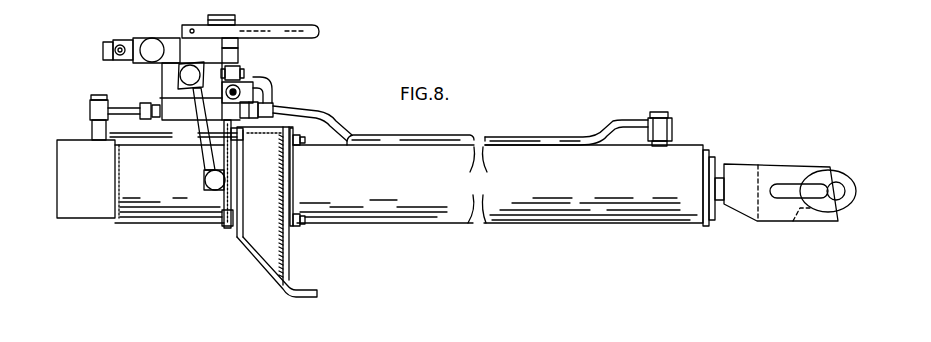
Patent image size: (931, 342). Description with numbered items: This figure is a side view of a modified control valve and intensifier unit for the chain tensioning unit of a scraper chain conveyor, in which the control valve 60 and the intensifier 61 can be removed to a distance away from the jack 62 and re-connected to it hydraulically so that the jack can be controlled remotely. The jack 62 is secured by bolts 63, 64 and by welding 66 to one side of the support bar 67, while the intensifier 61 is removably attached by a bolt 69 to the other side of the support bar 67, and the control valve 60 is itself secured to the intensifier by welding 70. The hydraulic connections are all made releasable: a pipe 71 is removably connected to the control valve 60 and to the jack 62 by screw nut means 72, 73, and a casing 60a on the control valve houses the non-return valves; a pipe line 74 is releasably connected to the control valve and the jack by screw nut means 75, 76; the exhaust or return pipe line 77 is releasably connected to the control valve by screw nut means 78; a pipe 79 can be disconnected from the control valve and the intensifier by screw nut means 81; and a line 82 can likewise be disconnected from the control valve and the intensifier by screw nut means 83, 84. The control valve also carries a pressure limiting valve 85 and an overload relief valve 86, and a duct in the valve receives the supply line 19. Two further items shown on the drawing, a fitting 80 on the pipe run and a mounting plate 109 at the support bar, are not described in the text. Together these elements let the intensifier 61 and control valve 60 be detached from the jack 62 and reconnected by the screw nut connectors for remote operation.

The supply line 19 is at (119, 46).
The pressure limiting valve 85 is at (152, 38).
The screw nut means 83 is at (187, 62).
The overload relief valve 86 is at (232, 20).
The casing 60a is at (238, 50).
The screw nut means 75 is at (240, 67).
The pipe line 77 is at (241, 86).
The pipe line 74 is at (272, 82).
The screw nut means 72 is at (268, 101).
The welding 70 is at (275, 108).
The screw nut means 76 is at (318, 114).
The pipe 71 is at (410, 138).
The screw nut means 73 is at (662, 112).
The pipe 79 is at (117, 107).
The control valve 60 is at (175, 80).
The screw nut means 78 is at (162, 97).
The screw nut means 81 is at (88, 99).
The line 82 is at (200, 109).
The coupling 80 is at (147, 119).
The bolt 69 is at (205, 135).
The intensifier 61 is at (145, 200).
The screw nut means 84 is at (203, 191).
The mounting plate 109 is at (228, 226).
The welding 66 is at (297, 137).
The bolt 63 is at (301, 147).
The bolt 64 is at (303, 224).
The support bar 67 is at (278, 243).
The jack 62 is at (398, 217).